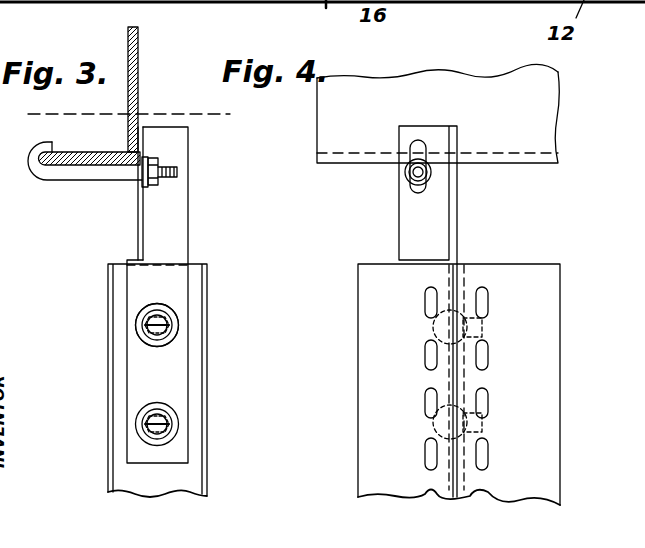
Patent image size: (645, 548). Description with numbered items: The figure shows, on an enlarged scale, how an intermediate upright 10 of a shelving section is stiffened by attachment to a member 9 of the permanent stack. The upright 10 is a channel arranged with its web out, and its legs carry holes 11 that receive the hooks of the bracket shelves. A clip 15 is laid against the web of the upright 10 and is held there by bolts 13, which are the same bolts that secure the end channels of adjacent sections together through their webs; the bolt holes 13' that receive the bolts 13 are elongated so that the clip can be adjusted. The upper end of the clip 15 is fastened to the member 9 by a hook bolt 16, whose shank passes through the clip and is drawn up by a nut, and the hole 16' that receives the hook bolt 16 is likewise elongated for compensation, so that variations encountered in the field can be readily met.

In FIG. 3, the member 9 is at (140, 80).
In FIG. 4, the member 9 is at (438, 113).
In FIG. 3, the upright 10 is at (220, 414).
In FIG. 4, the upright 10 is at (358, 418).
In FIG. 4, the hole 11 is at (484, 303).
In FIG. 3, the bolt 13 is at (125, 375).
In FIG. 4, the bolt 13 is at (486, 374).
In FIG. 3, the bolt hole 13' is at (208, 321).
In FIG. 3, the clip 15 is at (173, 232).
In FIG. 4, the clip 15 is at (454, 214).
In FIG. 3, the hook bolt 16 is at (102, 183).
In FIG. 4, the hook bolt 16 is at (375, 175).
In FIG. 3, the hole 16' is at (119, 193).
In FIG. 4, the hole 16' is at (382, 178).